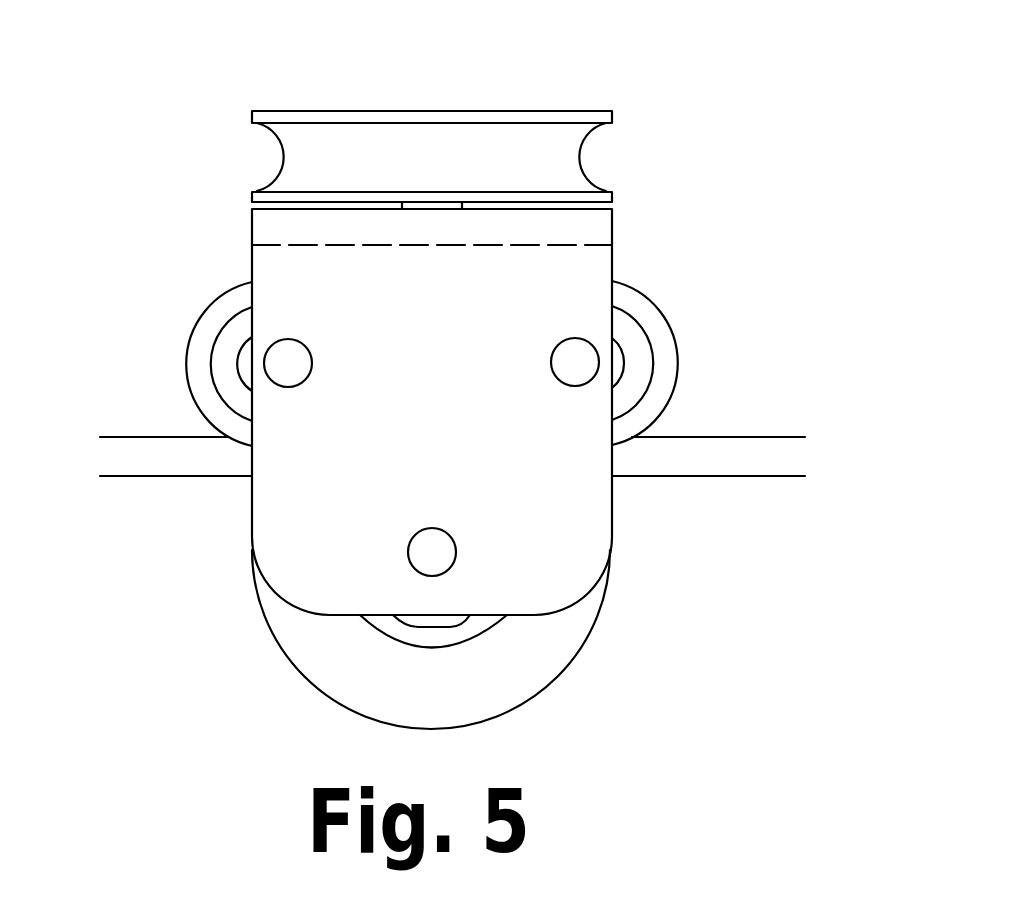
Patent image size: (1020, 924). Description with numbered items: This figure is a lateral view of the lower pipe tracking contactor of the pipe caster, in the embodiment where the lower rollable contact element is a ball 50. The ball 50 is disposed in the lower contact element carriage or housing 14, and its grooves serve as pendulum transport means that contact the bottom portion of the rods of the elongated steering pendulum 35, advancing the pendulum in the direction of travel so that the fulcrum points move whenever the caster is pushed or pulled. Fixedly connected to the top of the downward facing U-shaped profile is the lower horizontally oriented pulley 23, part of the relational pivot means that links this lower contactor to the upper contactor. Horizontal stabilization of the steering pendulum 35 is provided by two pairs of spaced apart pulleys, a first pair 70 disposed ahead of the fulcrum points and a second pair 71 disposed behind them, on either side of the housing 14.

The lower horizontally oriented pulley 23 is at (542, 108).
The lower contact element carriage or housing 14 is at (595, 512).
The second pair of spaced apart pulleys 71 is at (236, 285).
The first pair of spaced apart pulleys 70 is at (637, 288).
The elongated steering pendulum 35 is at (733, 437).
The ball 50 is at (578, 648).